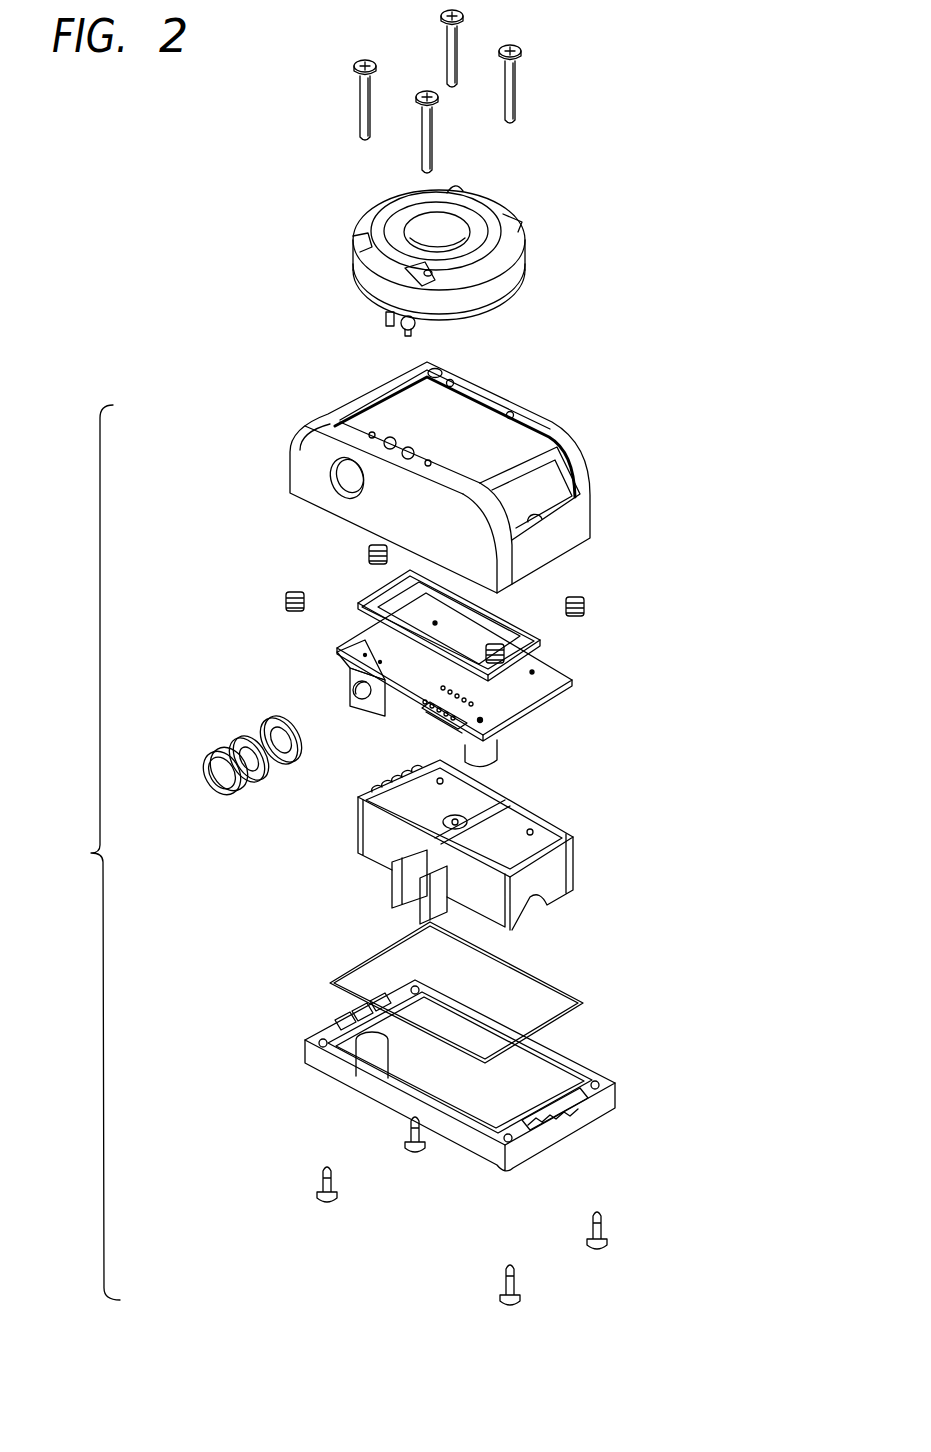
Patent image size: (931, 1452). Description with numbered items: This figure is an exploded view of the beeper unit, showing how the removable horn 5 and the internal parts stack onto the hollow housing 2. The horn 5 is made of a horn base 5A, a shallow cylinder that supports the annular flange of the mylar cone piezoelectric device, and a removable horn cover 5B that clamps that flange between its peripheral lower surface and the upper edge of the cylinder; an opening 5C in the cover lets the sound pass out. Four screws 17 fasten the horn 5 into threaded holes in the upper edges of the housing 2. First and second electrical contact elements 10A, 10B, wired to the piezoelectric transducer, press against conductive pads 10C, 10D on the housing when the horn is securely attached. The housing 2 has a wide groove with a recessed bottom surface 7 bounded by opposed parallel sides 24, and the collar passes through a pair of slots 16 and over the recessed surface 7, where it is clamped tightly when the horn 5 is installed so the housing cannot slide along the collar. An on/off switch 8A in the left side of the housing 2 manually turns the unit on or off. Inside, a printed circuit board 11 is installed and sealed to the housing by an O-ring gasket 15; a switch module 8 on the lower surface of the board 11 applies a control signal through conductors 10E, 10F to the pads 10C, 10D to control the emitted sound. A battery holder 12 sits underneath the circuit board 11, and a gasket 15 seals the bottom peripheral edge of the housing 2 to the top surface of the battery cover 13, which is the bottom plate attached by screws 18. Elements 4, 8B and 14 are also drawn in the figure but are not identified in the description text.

The housing 2 is at (90, 852).
The housing 4 is at (449, 477).
The horn 5 is at (454, 270).
The horn base 5A is at (512, 278).
The horn cover 5B is at (522, 240).
The opening 5C is at (458, 230).
The recessed bottom surface 7 is at (487, 458).
The switch module 8 is at (341, 687).
The on/off switch 8A is at (218, 712).
The lens opening 8B is at (337, 492).
The first electrical contact element 10A is at (390, 330).
The second electrical contact element 10B is at (408, 336).
The conductive pad 10C is at (388, 436).
The conductive pad 10D is at (409, 447).
The conductor 10E is at (365, 656).
The conductor 10F is at (382, 661).
The printed circuit board 11 is at (553, 680).
The battery holder 12 is at (580, 868).
The battery cover 13 is at (605, 1078).
The upper gasket 14 is at (516, 610).
The O-ring gasket 15 is at (570, 992).
The front slot 16 is at (538, 518).
The screws 17 is at (533, 81).
The screws 18 is at (410, 1146).
The opposed parallel sides 24 is at (520, 413).